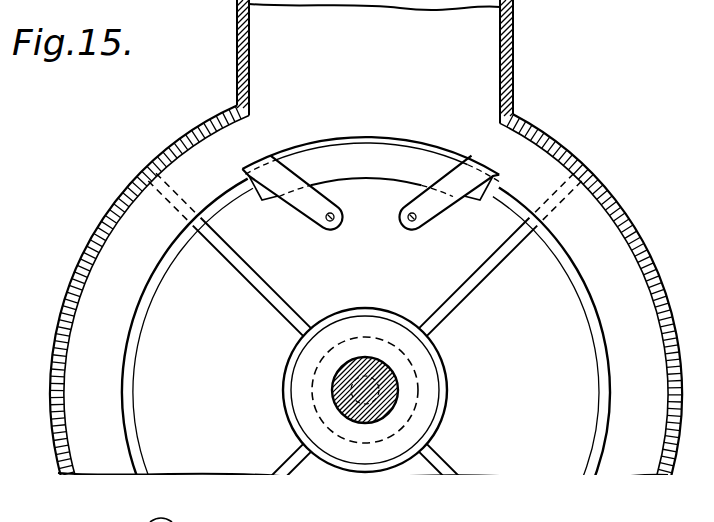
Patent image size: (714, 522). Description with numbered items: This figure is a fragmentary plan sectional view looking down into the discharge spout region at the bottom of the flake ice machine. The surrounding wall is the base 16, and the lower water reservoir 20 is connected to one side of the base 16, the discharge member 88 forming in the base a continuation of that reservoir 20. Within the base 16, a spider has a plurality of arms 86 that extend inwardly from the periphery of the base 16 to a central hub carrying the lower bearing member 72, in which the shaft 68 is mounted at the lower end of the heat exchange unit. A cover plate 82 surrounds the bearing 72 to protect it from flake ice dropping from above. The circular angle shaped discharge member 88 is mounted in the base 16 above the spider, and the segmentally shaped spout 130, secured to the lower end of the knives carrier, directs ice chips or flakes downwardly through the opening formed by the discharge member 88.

The base 16 is at (644, 250).
The lower water reservoir 20 is at (237, 50).
The segmentally shaped spout 130 is at (365, 147).
The circular angle shaped discharge member 88 is at (137, 330).
The arms 86 is at (275, 291).
The cover plate 82 is at (422, 360).
The lower bearing member 72 is at (423, 384).
The shaft 68 is at (335, 396).